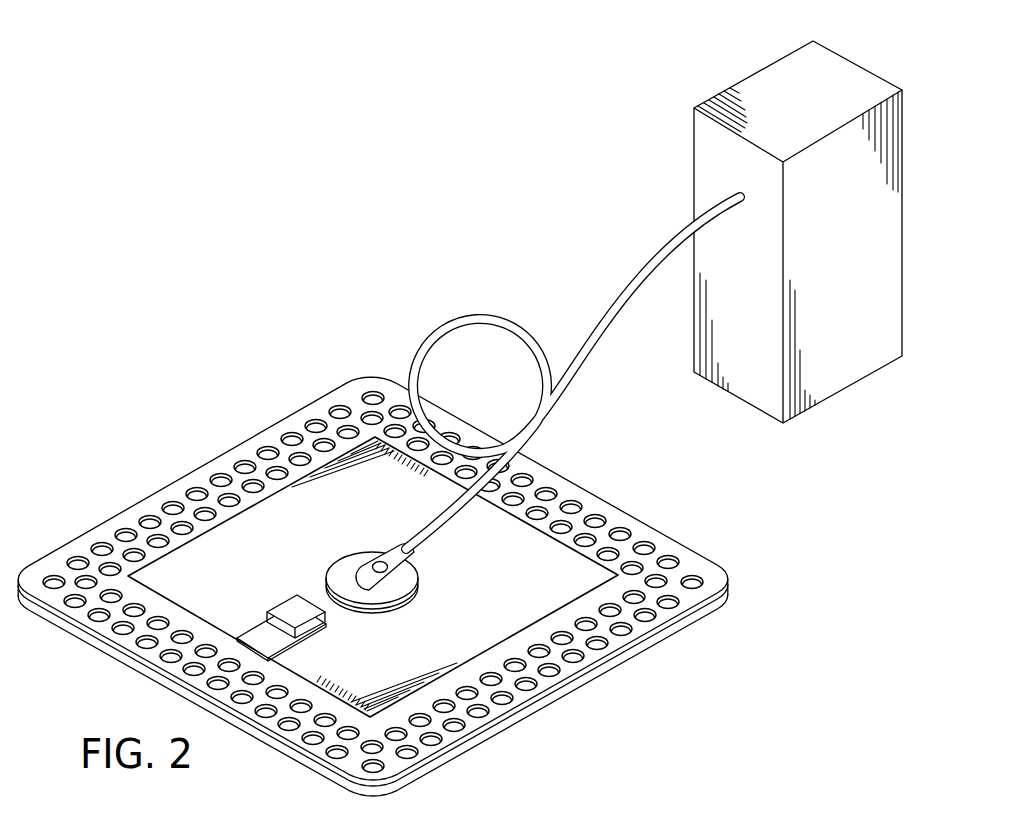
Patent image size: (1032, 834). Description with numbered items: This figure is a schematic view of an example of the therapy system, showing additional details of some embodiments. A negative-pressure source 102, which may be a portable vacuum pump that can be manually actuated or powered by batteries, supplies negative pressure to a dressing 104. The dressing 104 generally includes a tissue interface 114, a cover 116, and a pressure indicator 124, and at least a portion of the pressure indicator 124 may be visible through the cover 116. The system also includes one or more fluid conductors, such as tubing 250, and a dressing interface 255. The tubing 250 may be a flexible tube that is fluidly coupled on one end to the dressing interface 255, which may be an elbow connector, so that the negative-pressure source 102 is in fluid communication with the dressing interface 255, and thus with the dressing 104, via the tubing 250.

The negative-pressure source 102 is at (868, 56).
The dressing 104 is at (389, 586).
The tissue interface 114 is at (606, 684).
The cover 116 is at (718, 582).
The pressure indicator 124 is at (276, 597).
The tubing 250 is at (476, 318).
The dressing interface 255 is at (341, 562).